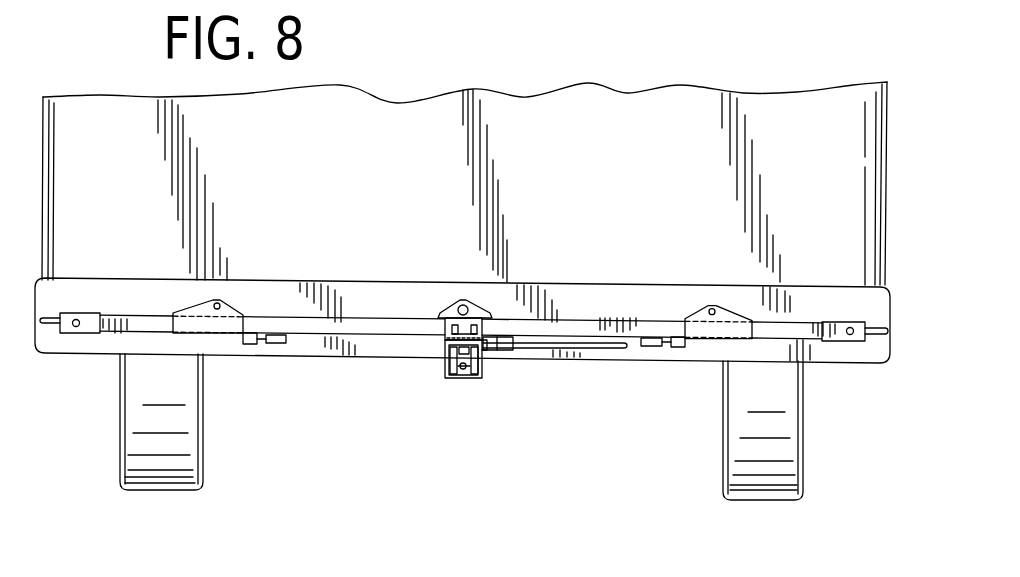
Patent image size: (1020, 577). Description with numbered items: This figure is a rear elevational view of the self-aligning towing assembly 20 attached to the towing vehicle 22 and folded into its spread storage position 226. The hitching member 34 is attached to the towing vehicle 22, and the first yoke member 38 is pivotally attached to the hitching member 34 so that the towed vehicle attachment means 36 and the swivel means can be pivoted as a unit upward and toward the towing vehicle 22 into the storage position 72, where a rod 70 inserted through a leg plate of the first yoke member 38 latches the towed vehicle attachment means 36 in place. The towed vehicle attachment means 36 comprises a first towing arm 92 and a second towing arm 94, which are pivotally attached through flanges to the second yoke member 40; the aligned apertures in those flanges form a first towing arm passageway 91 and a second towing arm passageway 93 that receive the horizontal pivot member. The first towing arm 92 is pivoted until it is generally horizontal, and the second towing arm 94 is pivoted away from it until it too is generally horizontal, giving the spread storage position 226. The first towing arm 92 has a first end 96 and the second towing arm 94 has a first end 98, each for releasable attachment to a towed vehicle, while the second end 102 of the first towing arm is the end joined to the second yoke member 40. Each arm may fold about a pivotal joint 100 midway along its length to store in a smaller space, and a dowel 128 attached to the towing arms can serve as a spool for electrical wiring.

The towing vehicle 22 is at (60, 160).
The towed vehicle attachment means 36 is at (556, 412).
The second towing arm 94 is at (133, 317).
The first towing arm 92 is at (793, 330).
The first end of second towing arm 98 is at (50, 340).
The first end of first towing arm 96 is at (873, 350).
The second end of first towing arm 102 is at (220, 352).
The pivotal joint 100 is at (706, 352).
The dowel 128 is at (600, 349).
The self-aligning towing assembly 20 is at (439, 376).
The first towing arm passageway 91 is at (461, 297).
The second towing arm passageway 93 is at (463, 310).
The second yoke member 40 is at (480, 330).
The storage position 72 is at (483, 442).
The hitching member 34 is at (462, 376).
The first yoke member 38 is at (445, 362).
The spread storage position 226 is at (462, 471).
The rod 70 is at (483, 350).